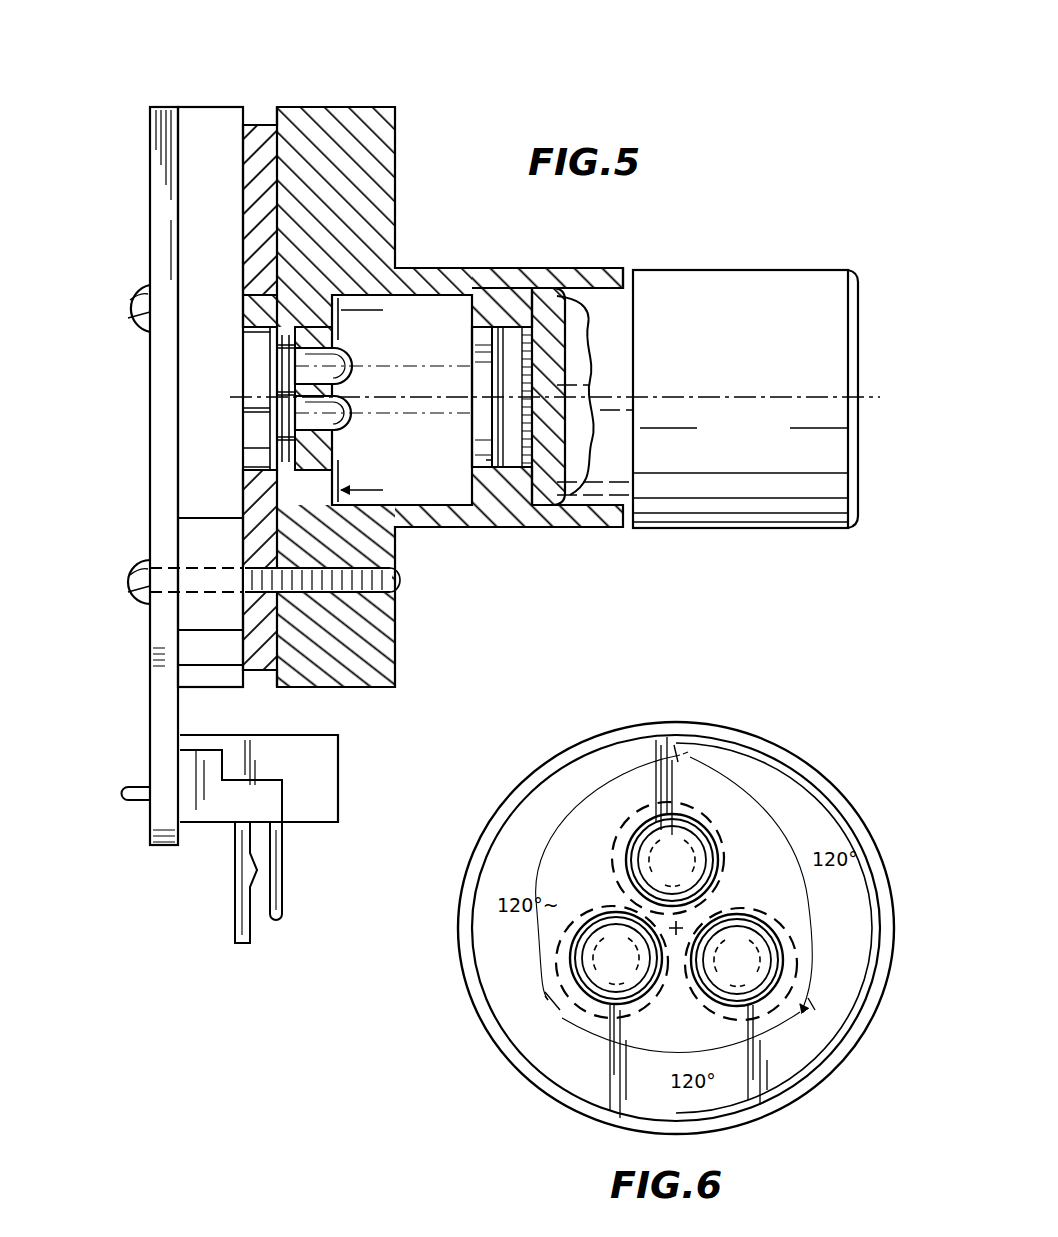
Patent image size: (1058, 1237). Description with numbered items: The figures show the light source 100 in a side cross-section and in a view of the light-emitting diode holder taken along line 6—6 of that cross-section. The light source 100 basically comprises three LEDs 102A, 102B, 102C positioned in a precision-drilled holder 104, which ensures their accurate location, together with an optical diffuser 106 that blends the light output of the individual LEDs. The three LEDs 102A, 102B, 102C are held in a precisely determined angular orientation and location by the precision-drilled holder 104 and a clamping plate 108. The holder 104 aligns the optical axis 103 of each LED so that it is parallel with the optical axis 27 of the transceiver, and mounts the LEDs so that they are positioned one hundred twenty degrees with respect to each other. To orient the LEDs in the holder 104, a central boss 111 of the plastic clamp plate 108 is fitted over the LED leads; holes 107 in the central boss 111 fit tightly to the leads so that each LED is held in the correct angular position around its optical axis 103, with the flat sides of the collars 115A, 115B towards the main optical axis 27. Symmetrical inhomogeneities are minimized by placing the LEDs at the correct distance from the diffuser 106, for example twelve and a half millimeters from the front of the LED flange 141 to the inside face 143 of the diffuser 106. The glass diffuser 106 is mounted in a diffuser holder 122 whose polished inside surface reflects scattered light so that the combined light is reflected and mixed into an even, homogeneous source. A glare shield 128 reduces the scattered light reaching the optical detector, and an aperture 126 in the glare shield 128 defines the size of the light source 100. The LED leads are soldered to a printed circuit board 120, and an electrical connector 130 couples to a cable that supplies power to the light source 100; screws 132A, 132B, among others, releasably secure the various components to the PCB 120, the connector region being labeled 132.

In FIG. 5, the light source 100 is at (740, 185).
In FIG. 5, the precision-drilled holder 104 is at (433, 373).
In FIG. 6, the precision-drilled holder 104 is at (765, 776).
In FIG. 5, the optical diffuser 106 is at (507, 318).
In FIG. 5, the clamping plate 108 is at (203, 125).
In FIG. 5, the central boss 111 is at (250, 385).
In FIG. 5, the collar 115A is at (340, 300).
In FIG. 5, the collar 115B is at (385, 525).
In FIG. 5, the printed circuit board 120 is at (160, 215).
In FIG. 5, the diffuser holder 122 is at (375, 225).
In FIG. 5, the aperture 126 is at (575, 330).
In FIG. 5, the glare shield 128 is at (750, 290).
In FIG. 5, the optical axis 27 is at (868, 397).
In FIG. 5, the screw 132A is at (132, 322).
In FIG. 5, the screw 132B is at (152, 592).
In FIG. 5, the connector 132 is at (322, 765).
In FIG. 5, the electrical connector 130 is at (207, 822).
In FIG. 5, the LED flange 141 is at (352, 362).
In FIG. 5, the inside face 143 is at (515, 490).
In FIG. 5, the optical axis 103 is at (400, 370).
In FIG. 5, the LED 102A is at (340, 388).
In FIG. 6, the LED 102A is at (672, 825).
In FIG. 5, the LED 102B is at (352, 435).
In FIG. 6, the LED 102B is at (780, 988).
In FIG. 6, the LED 102C is at (583, 972).
In FIG. 6, the holes 107 is at (612, 830).
In FIG. 5, the section line 6- 6 is at (368, 400).